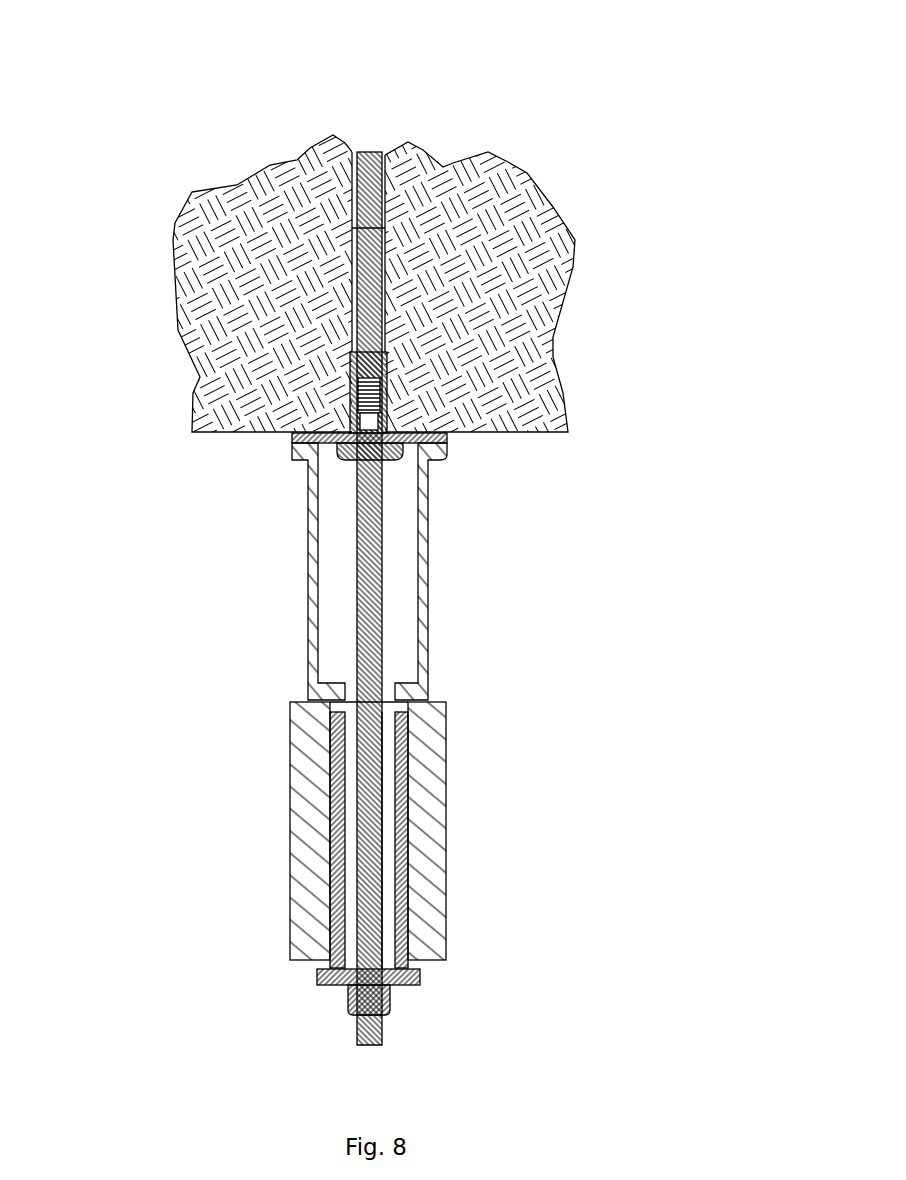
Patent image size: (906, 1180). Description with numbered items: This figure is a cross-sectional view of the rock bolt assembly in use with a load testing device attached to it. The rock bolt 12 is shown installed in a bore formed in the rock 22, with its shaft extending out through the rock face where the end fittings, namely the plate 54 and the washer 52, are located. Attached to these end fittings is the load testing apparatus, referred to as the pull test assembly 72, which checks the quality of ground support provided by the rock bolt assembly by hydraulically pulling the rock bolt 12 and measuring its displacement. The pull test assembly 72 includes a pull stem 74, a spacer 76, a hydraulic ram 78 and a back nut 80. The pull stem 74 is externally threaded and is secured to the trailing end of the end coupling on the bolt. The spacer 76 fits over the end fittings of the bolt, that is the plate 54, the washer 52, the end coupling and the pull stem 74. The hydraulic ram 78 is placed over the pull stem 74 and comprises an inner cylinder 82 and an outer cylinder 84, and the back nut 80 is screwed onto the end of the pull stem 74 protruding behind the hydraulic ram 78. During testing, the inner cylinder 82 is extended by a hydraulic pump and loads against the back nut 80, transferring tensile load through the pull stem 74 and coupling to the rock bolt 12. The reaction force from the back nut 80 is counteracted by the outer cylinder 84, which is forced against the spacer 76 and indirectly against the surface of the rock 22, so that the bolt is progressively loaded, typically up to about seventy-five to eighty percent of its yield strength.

The rock bolt 12 is at (385, 200).
The rock 22 is at (372, 265).
The plate 54 is at (292, 437).
The washer 52 is at (338, 451).
The pull test assembly 72 is at (519, 729).
The spacer 76 is at (428, 603).
The hydraulic ram 78 is at (447, 830).
The outer cylinder 84 is at (427, 905).
The inner cylinder 82 is at (387, 948).
The back nut 80 is at (413, 978).
The pull stem 74 is at (380, 1033).